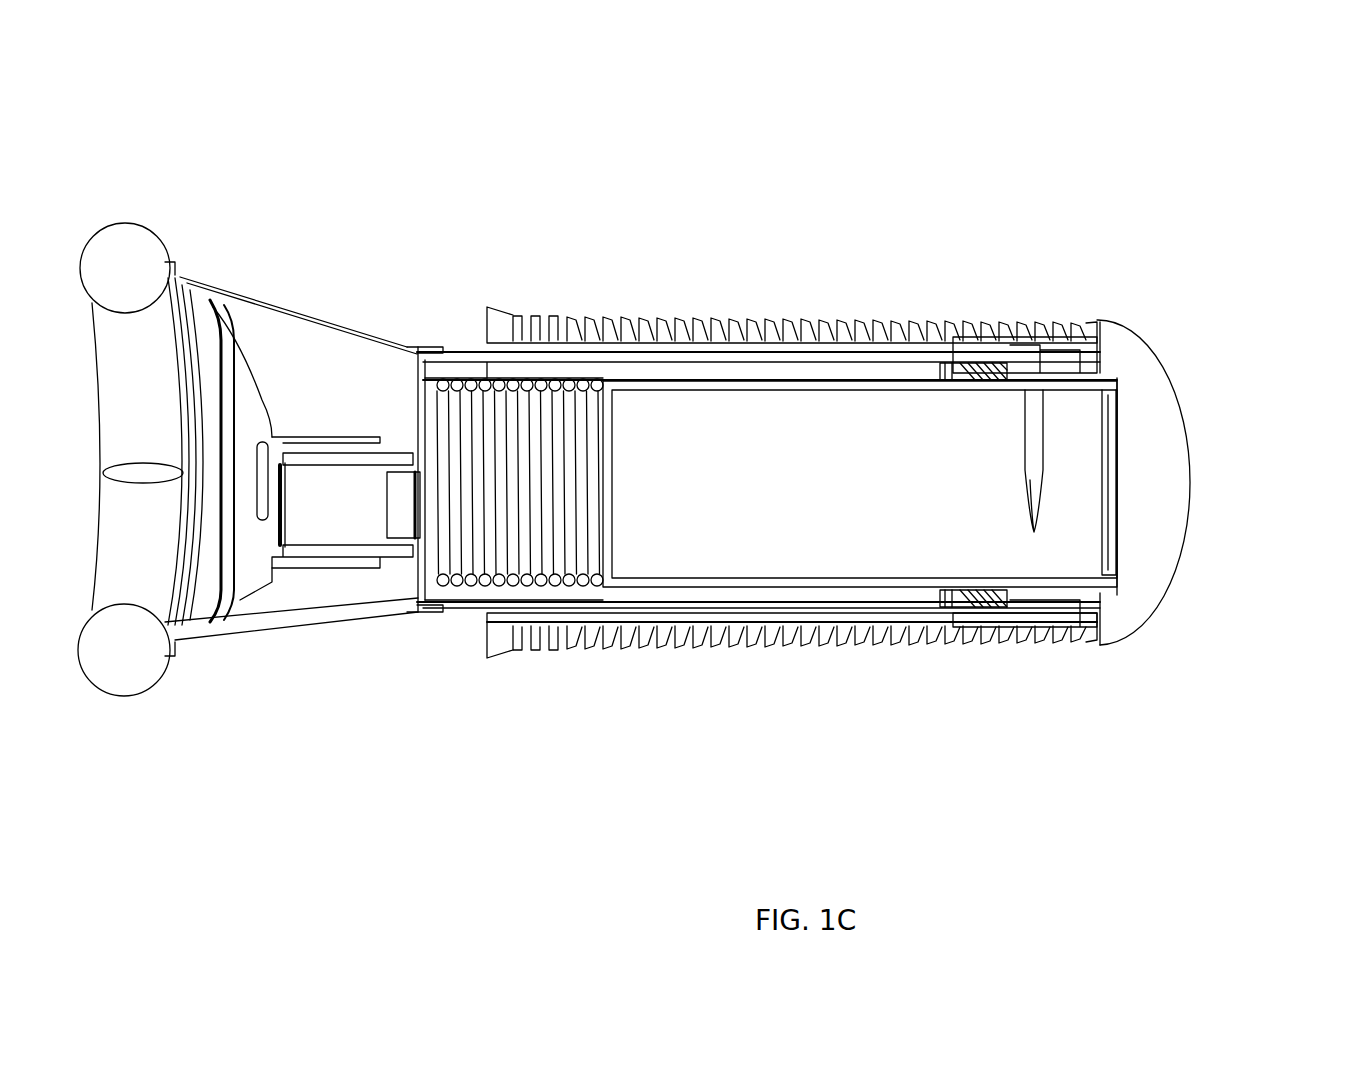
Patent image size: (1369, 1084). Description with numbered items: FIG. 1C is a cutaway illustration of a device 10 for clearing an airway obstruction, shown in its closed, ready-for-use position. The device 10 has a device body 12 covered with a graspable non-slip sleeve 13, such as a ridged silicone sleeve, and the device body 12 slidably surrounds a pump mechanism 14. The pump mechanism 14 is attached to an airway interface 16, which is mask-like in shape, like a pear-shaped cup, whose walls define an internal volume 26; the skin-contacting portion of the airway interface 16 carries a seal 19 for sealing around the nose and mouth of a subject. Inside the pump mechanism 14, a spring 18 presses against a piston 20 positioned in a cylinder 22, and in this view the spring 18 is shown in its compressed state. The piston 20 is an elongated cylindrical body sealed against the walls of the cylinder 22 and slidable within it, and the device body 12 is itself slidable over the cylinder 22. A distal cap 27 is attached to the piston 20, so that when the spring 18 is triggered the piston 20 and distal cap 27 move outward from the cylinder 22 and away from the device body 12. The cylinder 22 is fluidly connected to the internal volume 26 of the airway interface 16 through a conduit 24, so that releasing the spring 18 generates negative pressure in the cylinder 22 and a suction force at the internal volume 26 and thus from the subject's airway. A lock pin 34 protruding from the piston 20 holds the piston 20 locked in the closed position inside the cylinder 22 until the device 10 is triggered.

The device 10 is at (1008, 165).
The device body 12 is at (568, 348).
The graspable non-slip sleeve 13 is at (528, 650).
The pump mechanism 14 is at (872, 580).
The airway interface 16 is at (315, 318).
The spring 18 is at (480, 548).
The seal 19 is at (128, 253).
The piston 20 is at (710, 470).
The cylinder 22 is at (830, 372).
The conduit 24 is at (347, 498).
The internal volume 26 is at (240, 495).
The distal cap 27 is at (1175, 465).
The lock pin 34 is at (1040, 352).